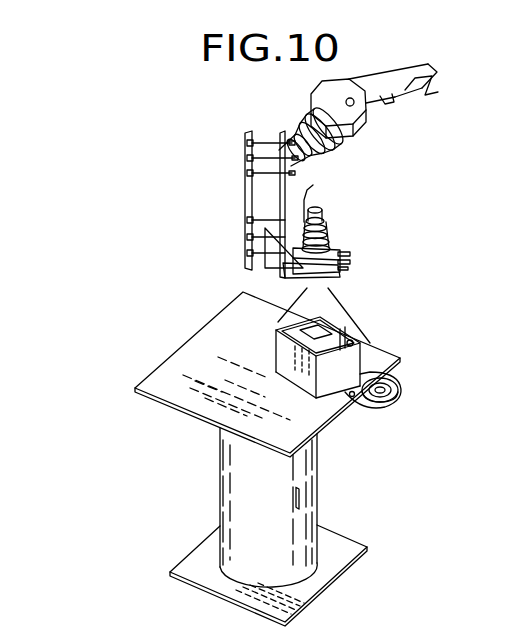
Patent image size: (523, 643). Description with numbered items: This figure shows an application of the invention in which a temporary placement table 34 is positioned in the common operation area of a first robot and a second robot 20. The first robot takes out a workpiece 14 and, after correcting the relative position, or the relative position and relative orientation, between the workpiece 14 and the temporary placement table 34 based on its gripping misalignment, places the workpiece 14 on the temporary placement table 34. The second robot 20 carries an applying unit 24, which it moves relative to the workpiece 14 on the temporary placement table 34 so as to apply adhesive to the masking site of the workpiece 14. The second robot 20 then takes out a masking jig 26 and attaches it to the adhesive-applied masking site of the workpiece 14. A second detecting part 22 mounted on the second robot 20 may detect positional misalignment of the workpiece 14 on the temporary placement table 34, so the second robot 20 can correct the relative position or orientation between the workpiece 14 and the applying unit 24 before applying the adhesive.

The workpiece 14 is at (375, 432).
The second robot 20 is at (296, 100).
The second detecting part 22 is at (354, 231).
The applying unit 24 is at (352, 284).
The masking jig 26 is at (244, 210).
The temporary placement table 34 is at (150, 412).